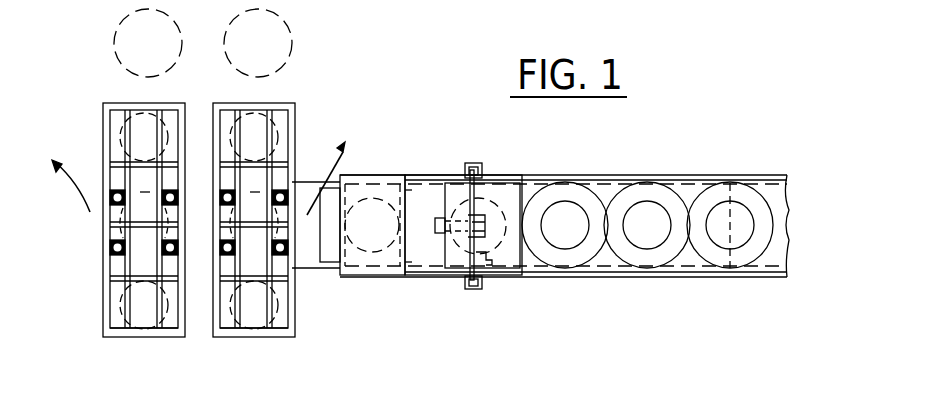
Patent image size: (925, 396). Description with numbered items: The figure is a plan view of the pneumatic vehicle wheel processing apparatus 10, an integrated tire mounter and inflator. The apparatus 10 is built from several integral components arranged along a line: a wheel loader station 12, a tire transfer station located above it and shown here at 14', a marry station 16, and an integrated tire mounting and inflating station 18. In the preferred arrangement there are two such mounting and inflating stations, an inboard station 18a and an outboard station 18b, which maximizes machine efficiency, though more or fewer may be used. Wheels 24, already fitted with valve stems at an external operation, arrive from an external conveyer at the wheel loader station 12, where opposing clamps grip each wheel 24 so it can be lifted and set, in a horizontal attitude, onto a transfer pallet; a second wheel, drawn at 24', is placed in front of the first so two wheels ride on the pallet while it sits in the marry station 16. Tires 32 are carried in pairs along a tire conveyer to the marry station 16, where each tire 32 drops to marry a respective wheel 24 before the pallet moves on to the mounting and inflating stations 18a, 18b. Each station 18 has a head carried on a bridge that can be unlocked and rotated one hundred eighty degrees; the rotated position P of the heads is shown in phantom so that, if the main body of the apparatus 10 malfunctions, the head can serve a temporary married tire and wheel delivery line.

The rotated position P is at (230, 23).
The pneumatic vehicle wheel processing apparatus 10 is at (402, 111).
The wheel loader station 12 is at (732, 282).
The conveyor frame 14' is at (573, 204).
The marry station 16 is at (417, 288).
The integrated tire mounting and inflating station 18 is at (200, 226).
The inboard integrated tire mounting and inflating station 18a is at (254, 355).
The outboard integrated tire mounting and inflating station 18b is at (129, 353).
The wheel 24 is at (471, 244).
The second gripper position 24' is at (366, 245).
The tire 32 is at (622, 187).